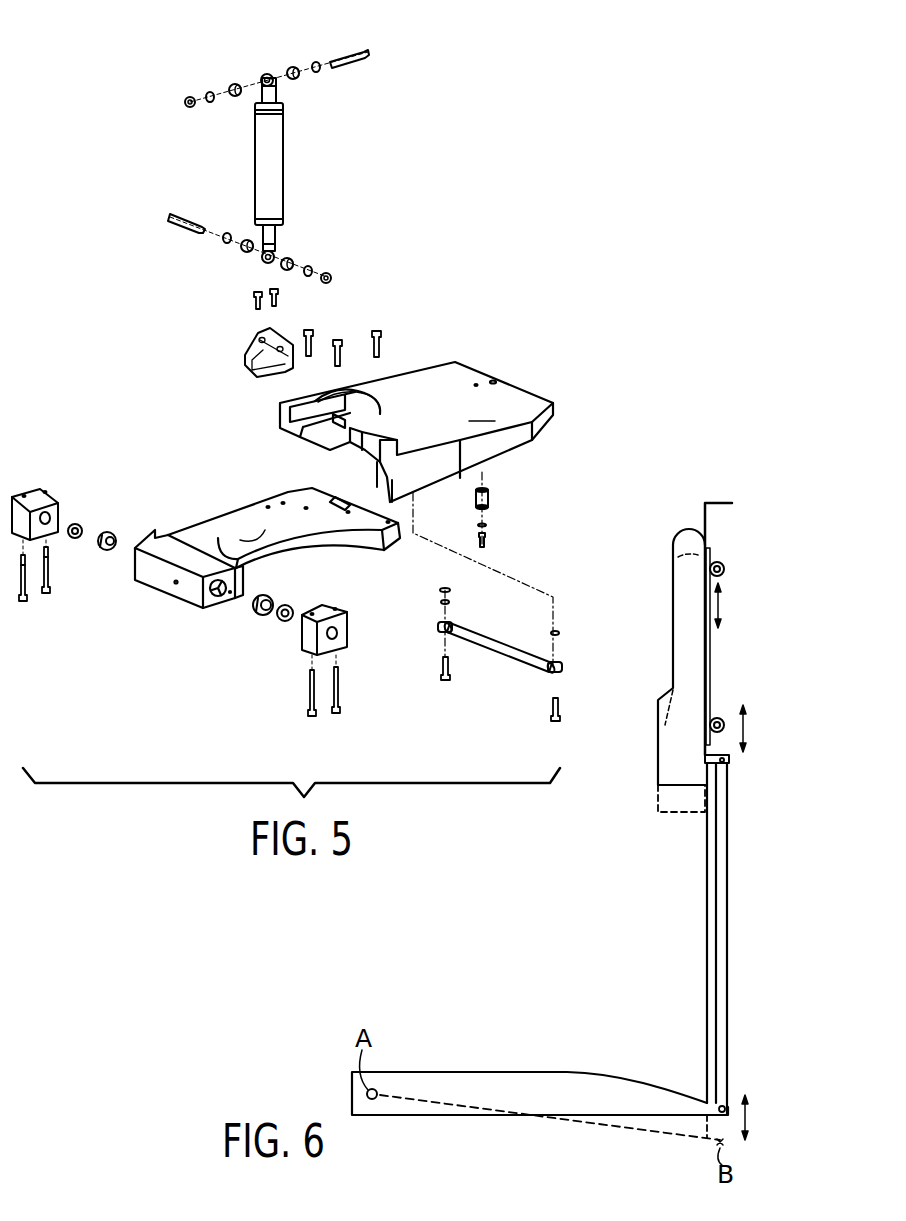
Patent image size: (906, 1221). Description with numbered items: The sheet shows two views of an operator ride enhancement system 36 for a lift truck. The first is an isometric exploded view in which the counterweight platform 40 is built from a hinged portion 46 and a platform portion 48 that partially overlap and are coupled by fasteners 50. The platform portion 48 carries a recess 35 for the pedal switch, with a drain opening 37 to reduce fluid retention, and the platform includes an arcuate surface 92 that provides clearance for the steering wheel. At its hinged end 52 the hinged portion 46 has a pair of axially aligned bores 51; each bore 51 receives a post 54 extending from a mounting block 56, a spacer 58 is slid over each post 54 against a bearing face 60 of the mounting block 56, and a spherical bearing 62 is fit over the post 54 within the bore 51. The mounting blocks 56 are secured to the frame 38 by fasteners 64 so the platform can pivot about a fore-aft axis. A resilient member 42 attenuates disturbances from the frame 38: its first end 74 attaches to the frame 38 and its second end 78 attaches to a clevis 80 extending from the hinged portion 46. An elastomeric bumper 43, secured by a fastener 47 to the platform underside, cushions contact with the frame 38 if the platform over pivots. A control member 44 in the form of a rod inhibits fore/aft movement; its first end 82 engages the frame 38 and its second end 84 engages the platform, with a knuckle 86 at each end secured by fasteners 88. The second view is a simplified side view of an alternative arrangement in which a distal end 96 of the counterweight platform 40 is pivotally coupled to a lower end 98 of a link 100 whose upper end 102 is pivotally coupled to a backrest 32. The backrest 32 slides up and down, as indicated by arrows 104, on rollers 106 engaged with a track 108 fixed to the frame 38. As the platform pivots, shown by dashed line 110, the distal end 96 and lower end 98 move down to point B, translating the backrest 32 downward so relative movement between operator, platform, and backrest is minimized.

In FIG. 6, the backrest 32 is at (673, 605).
In FIG. 5, the recess 35 is at (367, 398).
In FIG. 5, the operator ride enhancement system 36 is at (205, 290).
In FIG. 5, the drain opening 37 is at (382, 414).
In FIG. 6, the frame 38 is at (720, 503).
In FIG. 5, the counterweight platform 40 is at (428, 522).
In FIG. 6, the counterweight platform 40 is at (452, 1072).
In FIG. 5, the resilient member 42 is at (301, 180).
In FIG. 5, the bumper 43 is at (492, 492).
In FIG. 5, the control member 44 is at (489, 624).
In FIG. 5, the hinged portion 46 is at (205, 530).
In FIG. 5, the fastener 47 is at (450, 503).
In FIG. 5, the platform portion 48 is at (416, 432).
In FIG. 5, the fasteners 50 is at (312, 330).
In FIG. 5, the bores 51 is at (222, 597).
In FIG. 5, the hinged end 52 is at (165, 585).
In FIG. 5, the post 54 is at (50, 518).
In FIG. 5, the mounting block 56 is at (30, 492).
In FIG. 5, the spacer 58 is at (68, 535).
In FIG. 5, the bearing face 60 is at (53, 502).
In FIG. 5, the spherical bearing 62 is at (117, 533).
In FIG. 5, the fasteners 64 is at (23, 603).
In FIG. 5, the first end 74 is at (262, 77).
In FIG. 5, the second end 78 is at (277, 252).
In FIG. 5, the clevis 80 is at (278, 372).
In FIG. 5, the first end 82 is at (450, 623).
In FIG. 5, the second end 84 is at (558, 675).
In FIG. 5, the knuckle 86 is at (440, 632).
In FIG. 5, the fasteners 88 is at (553, 723).
In FIG. 5, the arcuate surface 92 is at (376, 472).
In FIG. 6, the distal end 96 is at (728, 1118).
In FIG. 6, the lower end 98 is at (726, 1105).
In FIG. 6, the link 100 is at (728, 933).
In FIG. 6, the upper end 102 is at (723, 763).
In FIG. 6, the arrows 104 is at (722, 605).
In FIG. 6, the rollers 106 is at (725, 569).
In FIG. 6, the track 108 is at (710, 683).
In FIG. 6, the dashed line 110 is at (630, 1132).